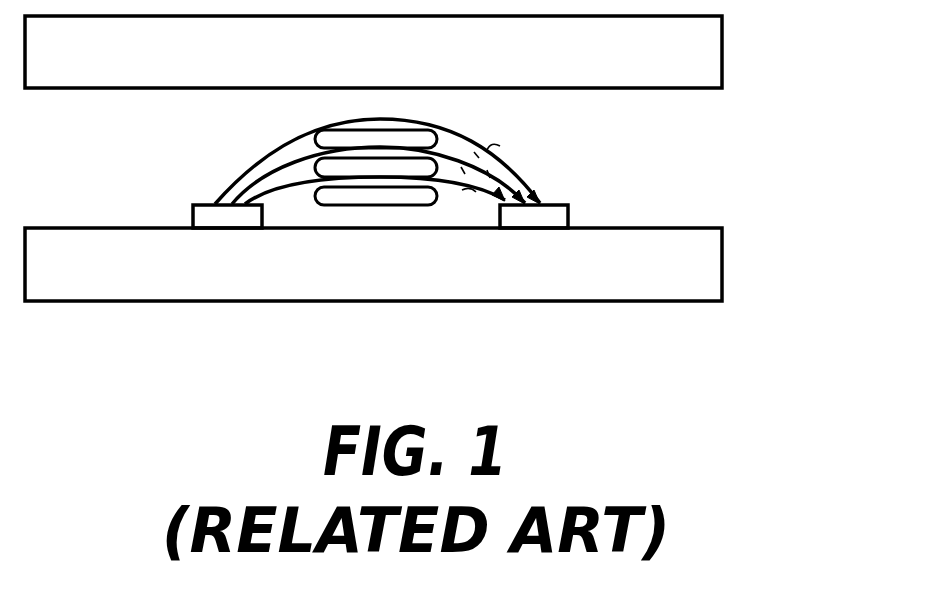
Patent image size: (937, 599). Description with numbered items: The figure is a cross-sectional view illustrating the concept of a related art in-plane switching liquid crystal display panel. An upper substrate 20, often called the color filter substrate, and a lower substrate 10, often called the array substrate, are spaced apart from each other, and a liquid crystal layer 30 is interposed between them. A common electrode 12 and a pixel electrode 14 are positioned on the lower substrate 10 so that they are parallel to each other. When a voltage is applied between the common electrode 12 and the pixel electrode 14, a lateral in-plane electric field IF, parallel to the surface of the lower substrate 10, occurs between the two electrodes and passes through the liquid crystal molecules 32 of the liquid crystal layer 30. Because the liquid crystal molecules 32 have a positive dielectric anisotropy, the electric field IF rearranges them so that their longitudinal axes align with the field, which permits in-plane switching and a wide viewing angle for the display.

The lower substrate 10 is at (753, 226).
The upper substrate 20 is at (753, 12).
The liquid crystal layer 30 is at (753, 88).
The common electrode 12 is at (224, 218).
The pixel electrode 14 is at (545, 218).
The liquid crystal molecules 32 is at (365, 200).
The in-plane electric field IF is at (467, 194).